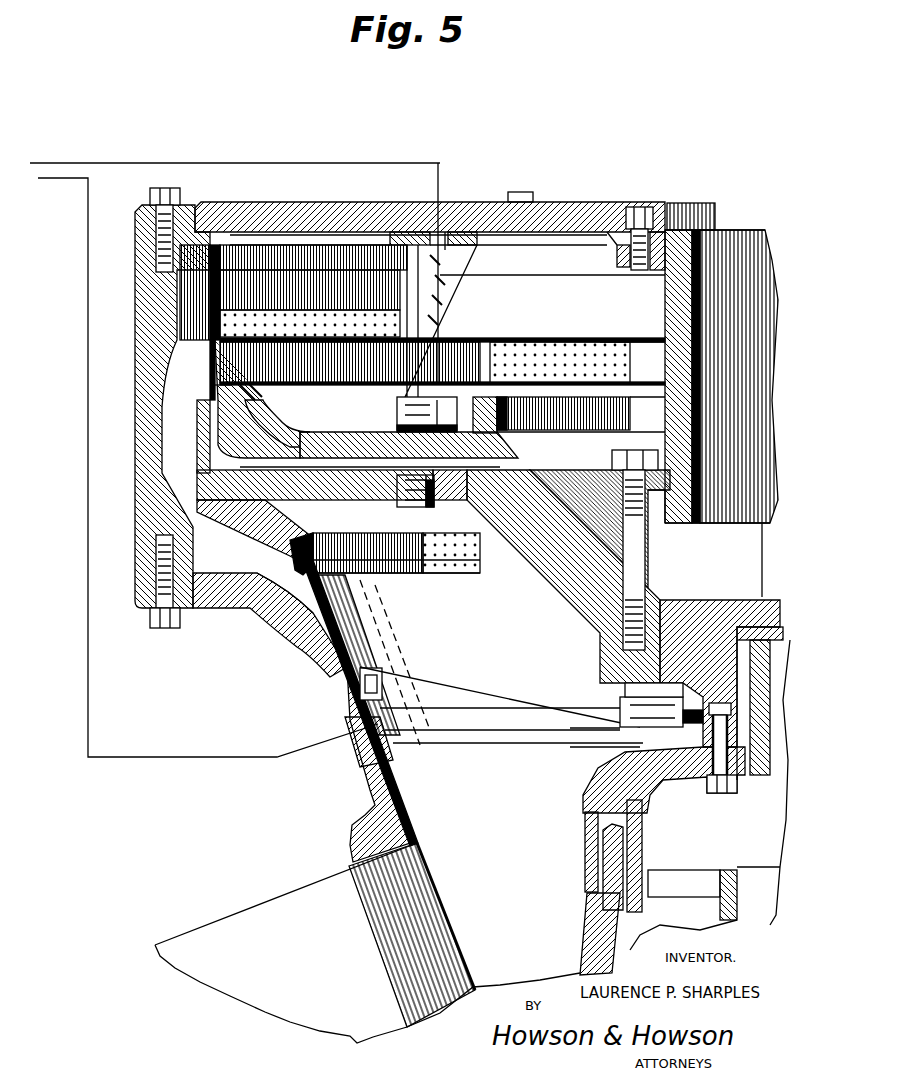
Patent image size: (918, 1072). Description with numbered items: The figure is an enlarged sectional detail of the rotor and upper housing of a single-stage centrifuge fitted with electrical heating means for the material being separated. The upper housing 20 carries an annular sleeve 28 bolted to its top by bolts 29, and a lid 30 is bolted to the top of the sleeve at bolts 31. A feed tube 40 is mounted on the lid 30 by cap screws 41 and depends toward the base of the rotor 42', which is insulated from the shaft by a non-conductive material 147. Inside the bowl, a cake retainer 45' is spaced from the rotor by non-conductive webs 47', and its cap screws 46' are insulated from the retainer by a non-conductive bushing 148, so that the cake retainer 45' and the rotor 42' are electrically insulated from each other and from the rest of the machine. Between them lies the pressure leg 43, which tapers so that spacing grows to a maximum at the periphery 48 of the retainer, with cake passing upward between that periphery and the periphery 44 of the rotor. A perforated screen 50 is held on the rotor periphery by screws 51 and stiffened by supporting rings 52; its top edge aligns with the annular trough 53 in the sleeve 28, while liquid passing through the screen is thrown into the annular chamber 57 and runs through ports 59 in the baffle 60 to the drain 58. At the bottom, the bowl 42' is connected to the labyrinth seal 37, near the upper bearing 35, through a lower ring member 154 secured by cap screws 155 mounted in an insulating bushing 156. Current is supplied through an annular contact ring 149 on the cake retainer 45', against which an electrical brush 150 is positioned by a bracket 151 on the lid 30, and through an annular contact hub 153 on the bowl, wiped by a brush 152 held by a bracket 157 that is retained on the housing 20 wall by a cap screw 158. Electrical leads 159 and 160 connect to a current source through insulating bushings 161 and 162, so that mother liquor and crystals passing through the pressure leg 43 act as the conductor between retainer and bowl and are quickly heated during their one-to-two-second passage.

The upper housing 20 is at (300, 683).
The annular sleeve 28 is at (135, 388).
The bolts 29 is at (165, 628).
The lid 30 is at (593, 203).
The bolts 31 is at (170, 195).
The upper bearing 35 is at (680, 875).
The labyrinth seal 37 is at (588, 852).
The feed tube 40 is at (733, 230).
The cap screws 41 is at (645, 212).
The rotor 42' is at (546, 540).
The pressure leg 43 is at (250, 427).
The periphery of the rotor 44 is at (213, 386).
The cake retainer 45' is at (409, 427).
The cap screws 46' is at (581, 425).
The non-conductive webs 47' is at (596, 513).
The periphery of the retainer 48 is at (252, 392).
The perforated screen 50 is at (625, 345).
The screws 51 is at (200, 472).
The supporting rings 52 is at (213, 368).
The annular trough 53 is at (195, 290).
The annular chamber 57 is at (208, 580).
The drain 58 is at (248, 912).
The ports 59 is at (268, 568).
The baffle 60 is at (240, 522).
The non-conductive material 147 is at (740, 600).
The non-conductive bushing 148 is at (618, 462).
The annular contact ring 149 is at (497, 390).
The electrical brush 150 is at (430, 395).
The bracket 151 is at (460, 266).
The brush 152 is at (690, 727).
The annular contact hub 153 is at (637, 690).
The lower ring member 154 is at (647, 806).
The cap screws 155 is at (720, 793).
The insulating bushing 156 is at (745, 778).
The bracket 157 is at (478, 740).
The cap screw 158 is at (382, 690).
The electrical lead 159 is at (88, 318).
The electrical lead 160 is at (340, 163).
The insulating bushing 161 is at (445, 200).
The insulating bushing 162 is at (345, 738).